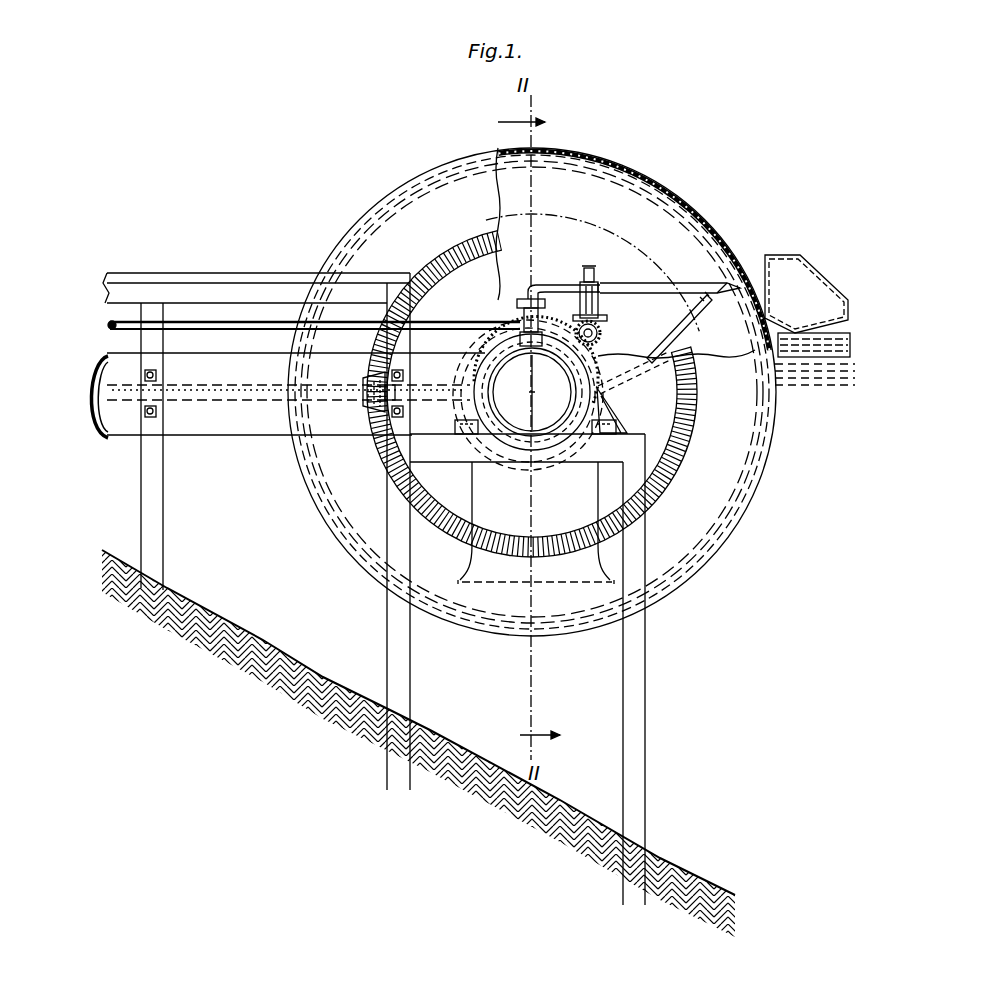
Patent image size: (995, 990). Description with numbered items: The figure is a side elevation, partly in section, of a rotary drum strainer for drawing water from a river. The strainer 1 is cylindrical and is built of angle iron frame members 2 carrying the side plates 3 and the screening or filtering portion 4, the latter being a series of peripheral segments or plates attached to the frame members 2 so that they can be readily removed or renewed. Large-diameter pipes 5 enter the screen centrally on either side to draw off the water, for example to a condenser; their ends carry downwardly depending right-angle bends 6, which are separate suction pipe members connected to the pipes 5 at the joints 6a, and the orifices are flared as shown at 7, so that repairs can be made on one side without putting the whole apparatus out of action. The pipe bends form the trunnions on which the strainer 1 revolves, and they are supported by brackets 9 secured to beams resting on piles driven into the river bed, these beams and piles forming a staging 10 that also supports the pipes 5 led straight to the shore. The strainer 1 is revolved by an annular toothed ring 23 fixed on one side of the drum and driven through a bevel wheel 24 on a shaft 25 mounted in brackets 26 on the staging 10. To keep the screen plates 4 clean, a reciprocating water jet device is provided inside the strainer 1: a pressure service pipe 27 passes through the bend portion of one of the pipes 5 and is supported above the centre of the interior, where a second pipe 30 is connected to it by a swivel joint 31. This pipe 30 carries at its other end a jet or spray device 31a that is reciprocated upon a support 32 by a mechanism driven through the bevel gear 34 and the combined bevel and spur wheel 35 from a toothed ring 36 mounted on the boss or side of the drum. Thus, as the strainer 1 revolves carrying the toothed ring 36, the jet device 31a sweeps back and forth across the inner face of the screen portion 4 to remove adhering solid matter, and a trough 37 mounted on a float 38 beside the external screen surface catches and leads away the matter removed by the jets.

The strainer 1 is at (532, 392).
The angle iron frame members 2 is at (652, 190).
The side plates 3 is at (567, 267).
The screening or filtering portion 4 is at (716, 248).
The pipes 5 is at (267, 428).
The right-angle bends 6 is at (616, 482).
The joints 6a is at (608, 432).
The flared orifices 7 is at (548, 582).
The brackets 9 is at (612, 412).
The staging 10 is at (232, 283).
The annular toothed ring 23 is at (445, 266).
The bevel wheel 24 is at (360, 395).
The shaft 25 is at (225, 402).
The brackets 26 is at (143, 372).
The pressure service pipe 27 is at (262, 322).
The second pipe 30 is at (670, 282).
The swivel joint 31 is at (525, 298).
The jet or spray device 31a is at (742, 284).
The support 32 is at (694, 308).
The bevel gear 34 is at (607, 318).
The combined bevel and spur wheel 35 is at (601, 337).
The toothed ring 36 is at (580, 302).
The trough 37 is at (806, 294).
The float 38 is at (822, 352).